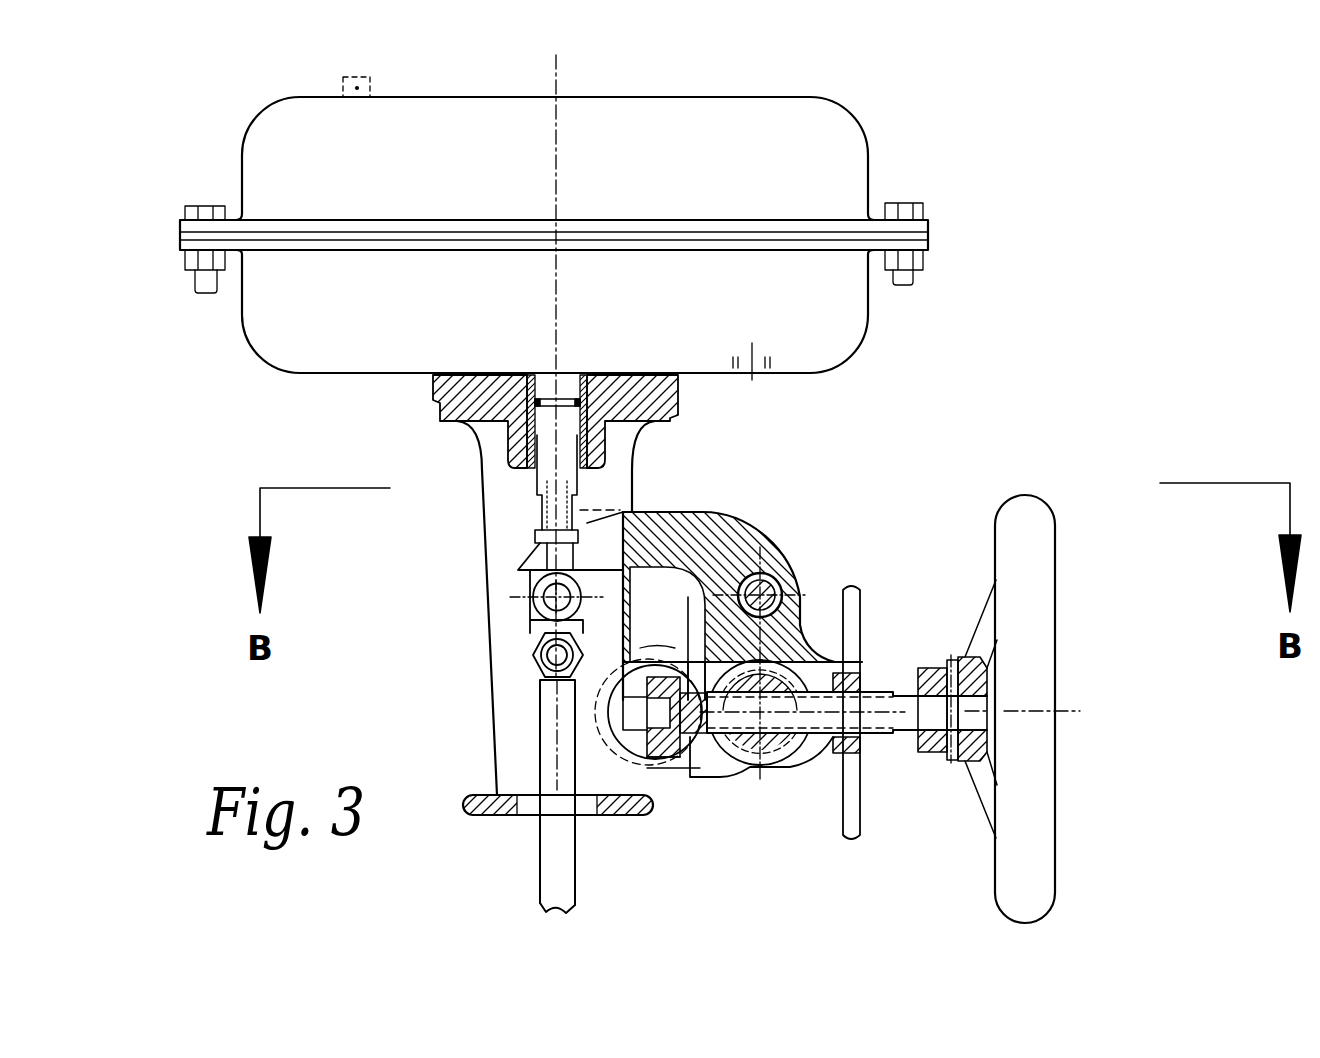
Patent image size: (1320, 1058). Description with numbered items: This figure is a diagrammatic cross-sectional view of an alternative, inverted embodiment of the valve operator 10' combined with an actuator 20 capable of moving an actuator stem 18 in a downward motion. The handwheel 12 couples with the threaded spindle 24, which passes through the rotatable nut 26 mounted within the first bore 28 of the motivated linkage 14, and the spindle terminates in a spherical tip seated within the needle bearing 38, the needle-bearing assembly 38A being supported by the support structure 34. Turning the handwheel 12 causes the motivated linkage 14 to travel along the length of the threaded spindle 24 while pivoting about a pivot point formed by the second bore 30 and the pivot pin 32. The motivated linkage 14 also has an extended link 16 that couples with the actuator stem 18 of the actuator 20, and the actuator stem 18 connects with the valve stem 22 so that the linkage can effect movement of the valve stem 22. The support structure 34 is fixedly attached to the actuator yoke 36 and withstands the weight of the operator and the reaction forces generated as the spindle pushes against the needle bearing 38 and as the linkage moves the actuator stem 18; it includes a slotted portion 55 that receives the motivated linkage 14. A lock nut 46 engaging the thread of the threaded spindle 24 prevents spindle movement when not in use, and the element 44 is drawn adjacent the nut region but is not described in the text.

The valve operator 10' is at (830, 658).
The handwheel 12 is at (1026, 505).
The motivated linkage 14 is at (650, 523).
The extended link 16 is at (510, 592).
The actuator stem 18 is at (550, 471).
The actuator 20 is at (380, 423).
The valve stem 22 is at (558, 850).
The threaded spindle 24 is at (875, 717).
The rotatable nut 26 is at (750, 757).
The first bore 28 is at (718, 765).
The second bore 30 is at (762, 572).
The pivot pin 32 is at (783, 603).
The support structure 34 is at (671, 625).
The actuator yoke 36 is at (500, 525).
The needle bearing 38 is at (646, 768).
The needle-bearing assembly 38A is at (670, 782).
The clamp 44 is at (790, 752).
The lock nut 46 is at (852, 610).
The slotted portion 55 is at (704, 600).